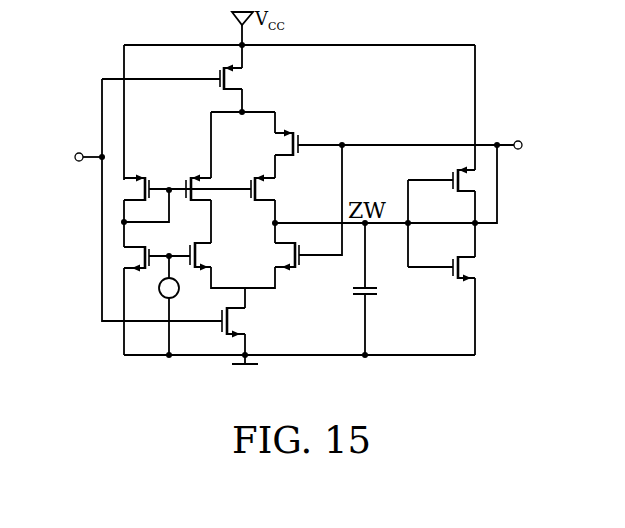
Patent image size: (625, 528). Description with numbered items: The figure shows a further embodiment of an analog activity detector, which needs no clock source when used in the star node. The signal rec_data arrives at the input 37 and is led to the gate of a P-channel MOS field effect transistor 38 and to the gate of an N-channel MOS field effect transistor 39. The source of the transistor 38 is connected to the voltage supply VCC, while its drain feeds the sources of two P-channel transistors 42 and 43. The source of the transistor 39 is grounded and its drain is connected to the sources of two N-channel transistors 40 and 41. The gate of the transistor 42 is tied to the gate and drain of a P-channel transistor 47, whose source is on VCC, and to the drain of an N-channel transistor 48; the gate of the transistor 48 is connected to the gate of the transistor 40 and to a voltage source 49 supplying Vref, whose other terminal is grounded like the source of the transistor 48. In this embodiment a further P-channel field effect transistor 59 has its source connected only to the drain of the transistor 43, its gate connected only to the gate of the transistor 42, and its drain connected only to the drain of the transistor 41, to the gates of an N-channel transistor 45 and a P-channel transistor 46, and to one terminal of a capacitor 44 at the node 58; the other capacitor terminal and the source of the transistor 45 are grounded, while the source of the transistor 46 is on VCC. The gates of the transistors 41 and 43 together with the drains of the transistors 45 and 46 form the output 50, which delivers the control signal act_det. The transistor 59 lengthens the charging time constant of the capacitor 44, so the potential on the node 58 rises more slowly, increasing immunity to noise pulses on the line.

The input 37 is at (76, 161).
The P-channel MOS field effect transistor 38 is at (218, 72).
The N-channel MOS field effect transistor 39 is at (220, 324).
The N-channel MOS field effect transistor 40 is at (198, 250).
The N-channel MOS field effect transistor 41 is at (298, 262).
The P-channel MOS field effect transistor 42 is at (188, 180).
The P-channel MOS field effect transistor 43 is at (297, 132).
The capacitor 44 is at (358, 297).
The N-channel MOS field effect transistor 45 is at (453, 272).
The P-channel MOS field effect transistor 46 is at (452, 185).
The P-channel MOS field effect transistor 47 is at (148, 178).
The N-channel MOS field effect transistor 48 is at (150, 250).
The voltage source 49 is at (179, 286).
The output 50 is at (521, 150).
The node 58 is at (366, 226).
The P-channel field effect transistor 59 is at (252, 181).